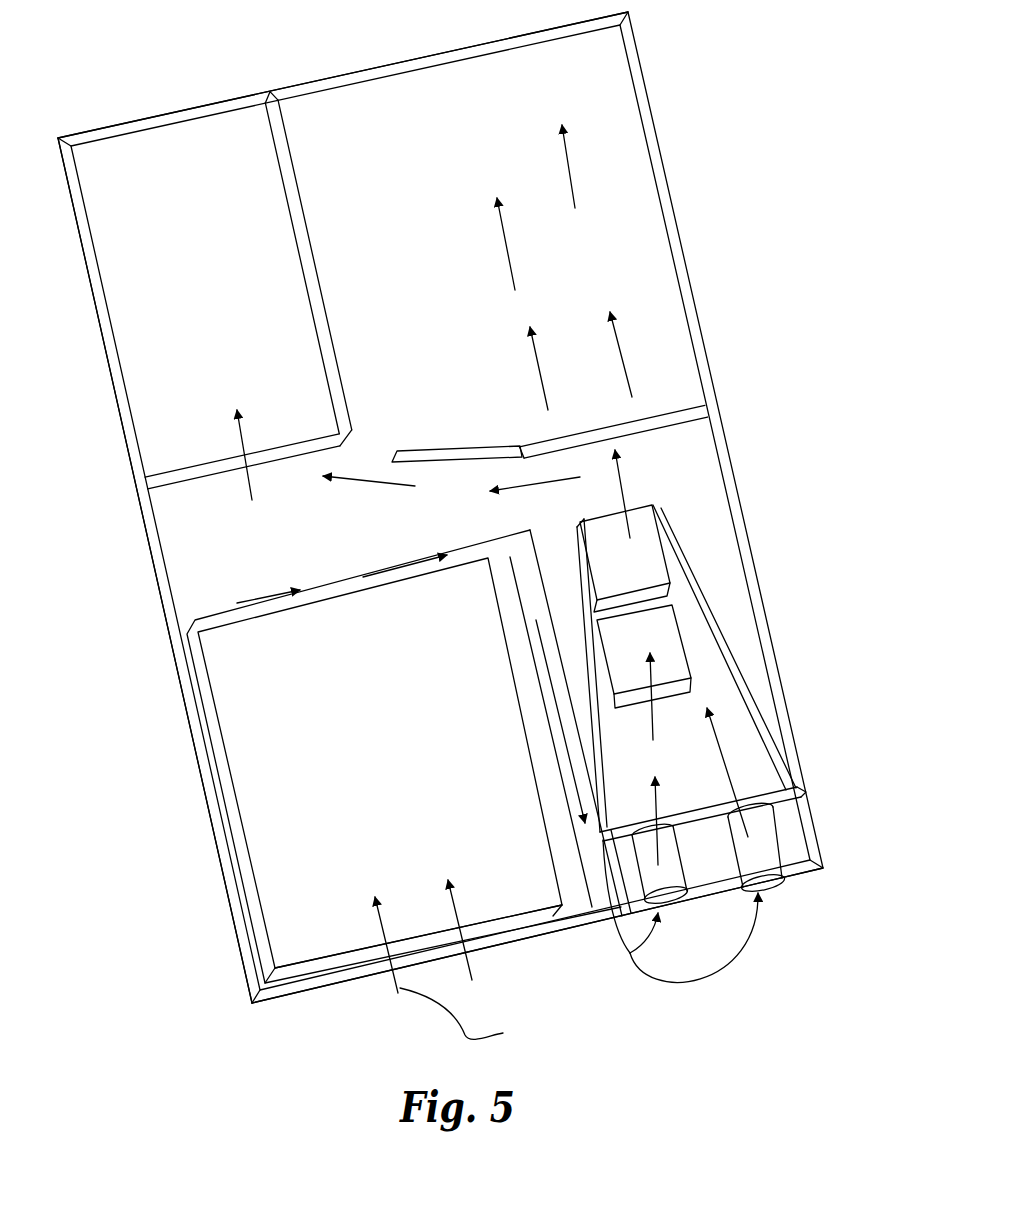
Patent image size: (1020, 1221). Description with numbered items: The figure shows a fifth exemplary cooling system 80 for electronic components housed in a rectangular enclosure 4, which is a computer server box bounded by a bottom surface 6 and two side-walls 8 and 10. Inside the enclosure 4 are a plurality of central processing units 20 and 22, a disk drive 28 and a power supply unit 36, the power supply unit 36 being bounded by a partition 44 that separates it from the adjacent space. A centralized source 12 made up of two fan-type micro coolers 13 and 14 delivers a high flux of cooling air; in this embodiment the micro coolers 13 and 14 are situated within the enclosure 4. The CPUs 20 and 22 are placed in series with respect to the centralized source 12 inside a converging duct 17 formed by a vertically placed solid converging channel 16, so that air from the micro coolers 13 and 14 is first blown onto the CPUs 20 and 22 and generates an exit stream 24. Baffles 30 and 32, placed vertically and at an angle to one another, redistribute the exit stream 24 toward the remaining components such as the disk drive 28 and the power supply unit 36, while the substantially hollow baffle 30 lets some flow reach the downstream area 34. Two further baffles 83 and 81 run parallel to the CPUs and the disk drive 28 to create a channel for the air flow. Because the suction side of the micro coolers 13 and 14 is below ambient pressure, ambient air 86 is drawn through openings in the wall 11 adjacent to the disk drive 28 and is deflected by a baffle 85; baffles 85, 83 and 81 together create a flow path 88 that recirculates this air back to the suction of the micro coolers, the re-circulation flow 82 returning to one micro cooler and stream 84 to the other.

The enclosure 4 is at (288, 92).
The bottom surface 6 is at (173, 553).
The side-wall 8 is at (683, 277).
The side-wall 10 is at (185, 718).
The wall 11 is at (510, 943).
The centralized source 12 is at (807, 957).
The micro cooler 13 is at (673, 905).
The micro cooler 14 is at (765, 893).
The converging channel 16 is at (787, 765).
The converging duct 17 is at (733, 743).
The central processing unit 20 is at (653, 635).
The central processing unit 22 is at (648, 552).
The exit stream 24 is at (627, 482).
The disk drive 28 is at (337, 945).
The baffle 30 is at (675, 415).
The baffle 32 is at (432, 453).
The downstream area 34 is at (560, 250).
The power supply unit 36 is at (193, 140).
The compartment shelf 44 is at (240, 441).
The cooling system 80 is at (798, 95).
The baffle 81 is at (533, 547).
The re-circulation flow 82 is at (630, 953).
The baffle 83 is at (580, 897).
The stream 84 is at (693, 988).
The baffle 85 is at (204, 602).
The ambient air 86 is at (470, 973).
The flow path 88 is at (260, 602).